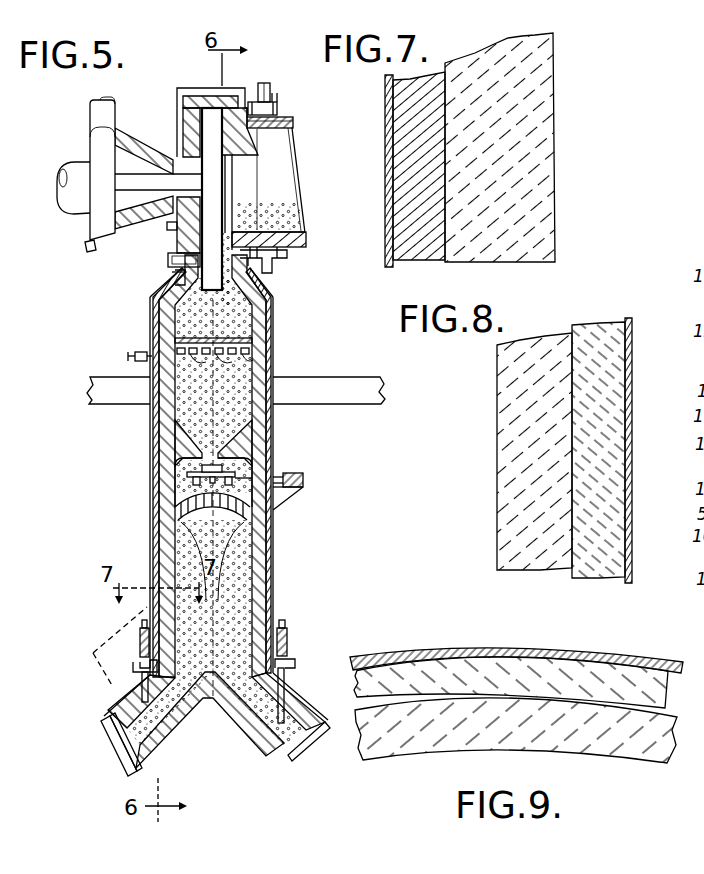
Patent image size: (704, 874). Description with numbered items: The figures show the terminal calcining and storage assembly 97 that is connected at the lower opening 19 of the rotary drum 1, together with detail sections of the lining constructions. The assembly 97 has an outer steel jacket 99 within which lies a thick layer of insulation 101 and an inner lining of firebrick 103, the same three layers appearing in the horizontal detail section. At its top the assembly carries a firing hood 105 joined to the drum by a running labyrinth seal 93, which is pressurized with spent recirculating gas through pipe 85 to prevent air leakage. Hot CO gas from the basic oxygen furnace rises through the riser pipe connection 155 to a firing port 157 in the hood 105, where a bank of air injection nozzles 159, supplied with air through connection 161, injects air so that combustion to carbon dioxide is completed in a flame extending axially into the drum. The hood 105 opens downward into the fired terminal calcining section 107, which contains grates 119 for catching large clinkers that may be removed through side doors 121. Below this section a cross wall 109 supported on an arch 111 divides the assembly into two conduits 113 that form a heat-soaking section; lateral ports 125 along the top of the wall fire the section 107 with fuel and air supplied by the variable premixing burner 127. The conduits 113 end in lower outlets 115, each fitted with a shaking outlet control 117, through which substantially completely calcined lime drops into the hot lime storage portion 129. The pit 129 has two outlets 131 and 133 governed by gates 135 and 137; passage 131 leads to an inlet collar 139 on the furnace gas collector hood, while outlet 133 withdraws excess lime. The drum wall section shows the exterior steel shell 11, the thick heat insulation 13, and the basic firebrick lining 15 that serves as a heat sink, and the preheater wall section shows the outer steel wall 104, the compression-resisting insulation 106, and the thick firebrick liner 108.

In FIG. 5, the rotary drum 1 is at (312, 249).
In FIG. 5, the exterior steel shell 11 is at (285, 116).
In FIG. 9, the exterior steel shell 11 is at (484, 647).
In FIG. 5, the heat insulation 13 is at (294, 119).
In FIG. 9, the heat insulation 13 is at (553, 676).
In FIG. 5, the basic firebrick lining 15 is at (296, 137).
In FIG. 9, the basic firebrick lining 15 is at (590, 745).
In FIG. 5, the lower opening 19 is at (239, 223).
In FIG. 5, the pipe 85 is at (270, 86).
In FIG. 5, the running labyrinth seal 93 is at (264, 270).
In FIG. 5, the terminal calcining and storage assembly 97 is at (282, 518).
In FIG. 5, the outer steel jacket 99 is at (274, 541).
In FIG. 7, the outer steel jacket 99 is at (389, 184).
In FIG. 5, the insulation 101 is at (268, 563).
In FIG. 7, the insulation 101 is at (419, 253).
In FIG. 5, the firebrick lining 103 is at (254, 577).
In FIG. 7, the firebrick lining 103 is at (543, 196).
In FIG. 8, the outer steel wall 104 is at (629, 395).
In FIG. 5, the firing hood 105 is at (174, 100).
In FIG. 8, the compression-resisting insulation 106 is at (605, 481).
In FIG. 5, the fired terminal calcining section 107 is at (190, 308).
In FIG. 8, the firebrick liner 108 is at (513, 455).
In FIG. 5, the cross wall 109 is at (178, 340).
In FIG. 5, the arch 111 is at (186, 510).
In FIG. 5, the conduits 113 is at (186, 422).
In FIG. 5, the lower outlets 115 is at (178, 456).
In FIG. 5, the shaking outlet control 117 is at (187, 473).
In FIG. 5, the grates 119 is at (177, 283).
In FIG. 5, the side doors 121 is at (170, 260).
In FIG. 5, the lateral ports 125 is at (255, 354).
In FIG. 5, the variable premixing air and fuel burner 127 is at (141, 361).
In FIG. 5, the storage portion 129 is at (236, 590).
In FIG. 5, the outlet 131 is at (173, 697).
In FIG. 5, the outlet 133 is at (268, 718).
In FIG. 5, the gate 135 is at (136, 664).
In FIG. 5, the gate 137 is at (285, 704).
In FIG. 5, the inlet collar 139 is at (112, 754).
In FIG. 5, the riser pipe connection 155 is at (78, 165).
In FIG. 5, the firing port 157 is at (196, 183).
In FIG. 5, the air injection nozzles 159 is at (144, 150).
In FIG. 5, the connection 161 is at (99, 112).